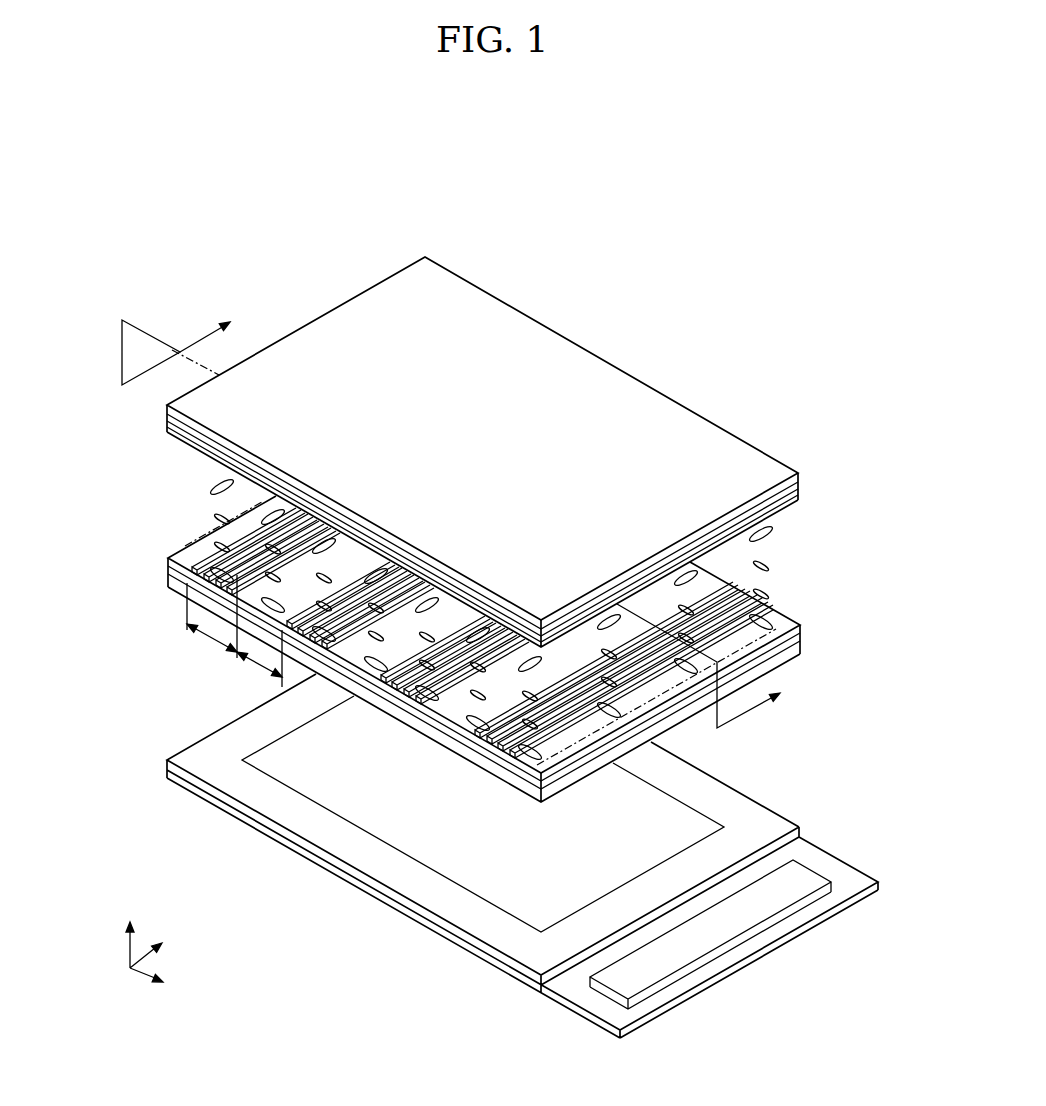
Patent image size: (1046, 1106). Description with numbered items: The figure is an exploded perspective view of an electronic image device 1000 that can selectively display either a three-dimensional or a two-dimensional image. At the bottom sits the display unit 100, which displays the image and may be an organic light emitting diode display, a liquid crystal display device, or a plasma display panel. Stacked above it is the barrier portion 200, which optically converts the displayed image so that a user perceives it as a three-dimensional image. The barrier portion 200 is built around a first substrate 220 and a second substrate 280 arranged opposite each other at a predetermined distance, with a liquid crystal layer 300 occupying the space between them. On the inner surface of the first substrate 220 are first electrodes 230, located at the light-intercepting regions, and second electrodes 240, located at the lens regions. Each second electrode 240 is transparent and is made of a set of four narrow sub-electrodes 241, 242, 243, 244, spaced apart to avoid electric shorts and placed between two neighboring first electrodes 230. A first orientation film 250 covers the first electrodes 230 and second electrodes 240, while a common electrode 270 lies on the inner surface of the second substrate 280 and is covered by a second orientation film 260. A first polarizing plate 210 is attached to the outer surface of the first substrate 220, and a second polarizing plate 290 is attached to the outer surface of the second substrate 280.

The electronic image device 1000 is at (503, 203).
The display unit 100 is at (176, 736).
The barrier portion 200 is at (158, 588).
The first polarizing plate 210 is at (801, 654).
The first substrate 220 is at (801, 641).
The first electrode 230 is at (452, 735).
The second electrode 240 is at (482, 756).
The sub-electrode 241 is at (380, 695).
The sub-electrode 242 is at (393, 690).
The sub-electrode 243 is at (408, 690).
The sub-electrode 244 is at (422, 690).
The first orientation film 250 is at (803, 626).
The second orientation film 260 is at (801, 498).
The common electrode 270 is at (799, 490).
The second substrate 280 is at (800, 483).
The second polarizing plate 290 is at (768, 460).
The liquid crystal layer 300 is at (808, 500).